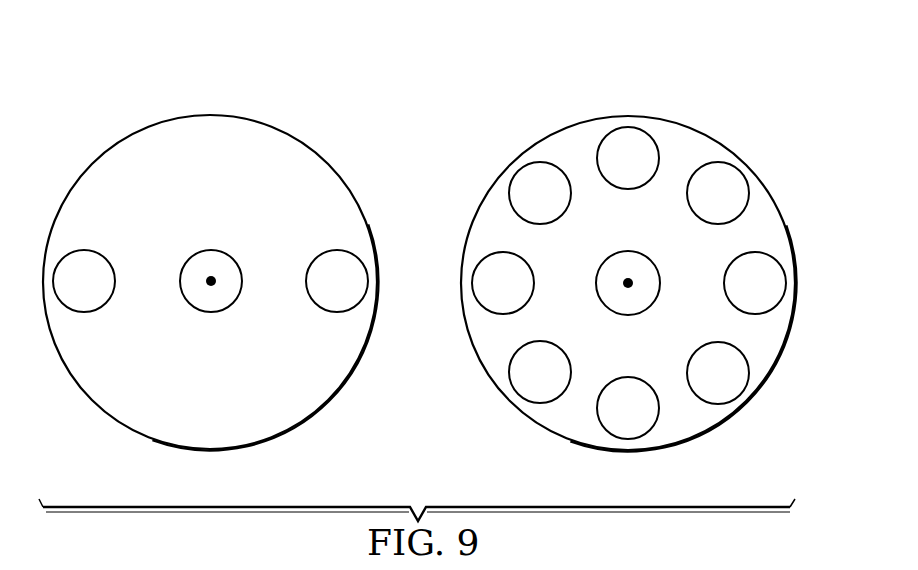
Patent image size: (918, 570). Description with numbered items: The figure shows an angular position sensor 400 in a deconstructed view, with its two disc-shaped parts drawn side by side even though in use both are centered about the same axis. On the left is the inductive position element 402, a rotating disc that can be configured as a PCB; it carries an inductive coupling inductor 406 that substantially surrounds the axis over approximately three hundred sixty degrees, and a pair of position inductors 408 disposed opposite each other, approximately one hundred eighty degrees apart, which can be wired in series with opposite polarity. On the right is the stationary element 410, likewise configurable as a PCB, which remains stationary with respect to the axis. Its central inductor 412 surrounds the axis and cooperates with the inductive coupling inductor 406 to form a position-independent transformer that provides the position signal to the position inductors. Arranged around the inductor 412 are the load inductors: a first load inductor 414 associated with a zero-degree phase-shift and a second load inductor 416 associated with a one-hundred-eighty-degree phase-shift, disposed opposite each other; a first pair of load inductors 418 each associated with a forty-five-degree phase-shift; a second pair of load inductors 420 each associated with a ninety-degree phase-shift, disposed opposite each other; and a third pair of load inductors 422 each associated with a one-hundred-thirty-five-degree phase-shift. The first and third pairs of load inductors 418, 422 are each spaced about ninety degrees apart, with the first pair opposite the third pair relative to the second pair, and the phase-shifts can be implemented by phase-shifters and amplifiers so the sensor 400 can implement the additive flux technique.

The angular position sensor 400 is at (118, 61).
The inductive position element 402 is at (211, 115).
The inductive coupling inductor 406 is at (210, 313).
The position inductors 408 is at (83, 313).
The stationary element 410 is at (687, 124).
The inductor 412 is at (631, 315).
The first load inductor 414 is at (699, 400).
The second load inductor 416 is at (516, 171).
The first pair of load inductors 418 is at (787, 283).
The second pair of load inductors 420 is at (740, 170).
The third pair of load inductors 422 is at (629, 128).